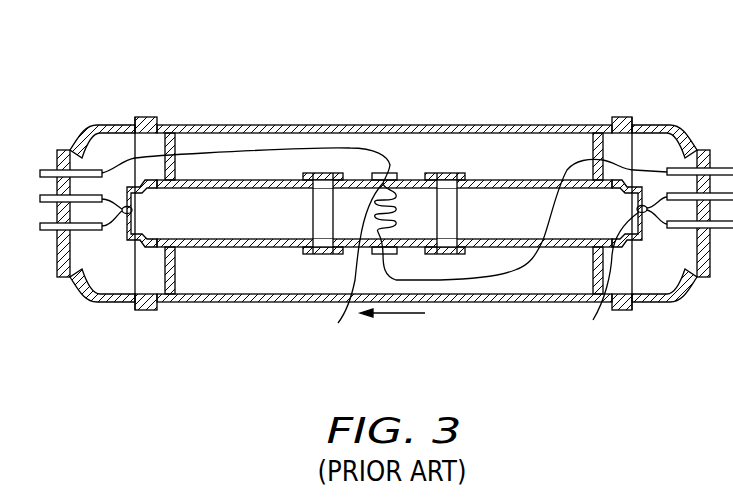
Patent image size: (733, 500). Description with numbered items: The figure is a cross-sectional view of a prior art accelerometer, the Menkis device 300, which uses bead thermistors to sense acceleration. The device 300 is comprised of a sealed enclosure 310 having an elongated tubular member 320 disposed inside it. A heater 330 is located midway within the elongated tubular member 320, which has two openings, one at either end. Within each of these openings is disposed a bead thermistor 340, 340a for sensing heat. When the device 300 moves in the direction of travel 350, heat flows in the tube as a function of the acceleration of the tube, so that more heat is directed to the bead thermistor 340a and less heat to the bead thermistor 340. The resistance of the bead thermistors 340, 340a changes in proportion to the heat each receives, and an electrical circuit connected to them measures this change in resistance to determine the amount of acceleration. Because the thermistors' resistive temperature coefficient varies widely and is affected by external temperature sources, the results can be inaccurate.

The Menkis '374 device 300 is at (386, 205).
The sealed enclosure 310 is at (555, 125).
The elongated tubular member 320 is at (516, 180).
The heater 330 is at (336, 265).
The bead thermistor 340 is at (132, 210).
The bead thermistor 340a is at (610, 276).
The direction of travel 350 is at (402, 315).